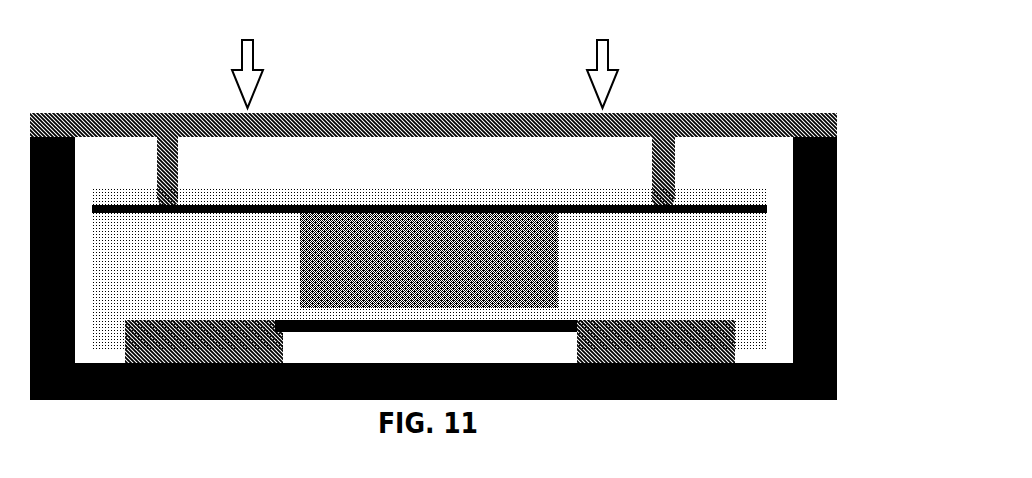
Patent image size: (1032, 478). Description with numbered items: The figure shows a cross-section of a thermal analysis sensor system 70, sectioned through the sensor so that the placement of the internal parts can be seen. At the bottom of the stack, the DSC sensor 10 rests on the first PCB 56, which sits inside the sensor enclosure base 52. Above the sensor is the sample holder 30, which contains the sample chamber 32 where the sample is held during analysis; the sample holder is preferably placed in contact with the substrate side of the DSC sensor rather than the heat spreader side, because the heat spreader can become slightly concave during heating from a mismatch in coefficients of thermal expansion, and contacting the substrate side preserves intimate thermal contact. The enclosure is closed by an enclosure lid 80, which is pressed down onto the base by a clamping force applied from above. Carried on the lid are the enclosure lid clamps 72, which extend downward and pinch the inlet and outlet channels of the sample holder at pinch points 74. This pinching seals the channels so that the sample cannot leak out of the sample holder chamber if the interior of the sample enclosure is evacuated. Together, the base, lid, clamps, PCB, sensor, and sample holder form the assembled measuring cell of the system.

The DSC sensor 10 is at (578, 320).
The sample holder 30 is at (270, 170).
The sample chamber 32 is at (429, 260).
The sensor enclosure base 52 is at (837, 183).
The first PCB 56 is at (135, 320).
The thermal analysis sensor system 70 is at (686, 66).
The enclosure lid clamps 72 is at (178, 163).
The pinch points 74 is at (157, 208).
The enclosure lid 80 is at (782, 113).